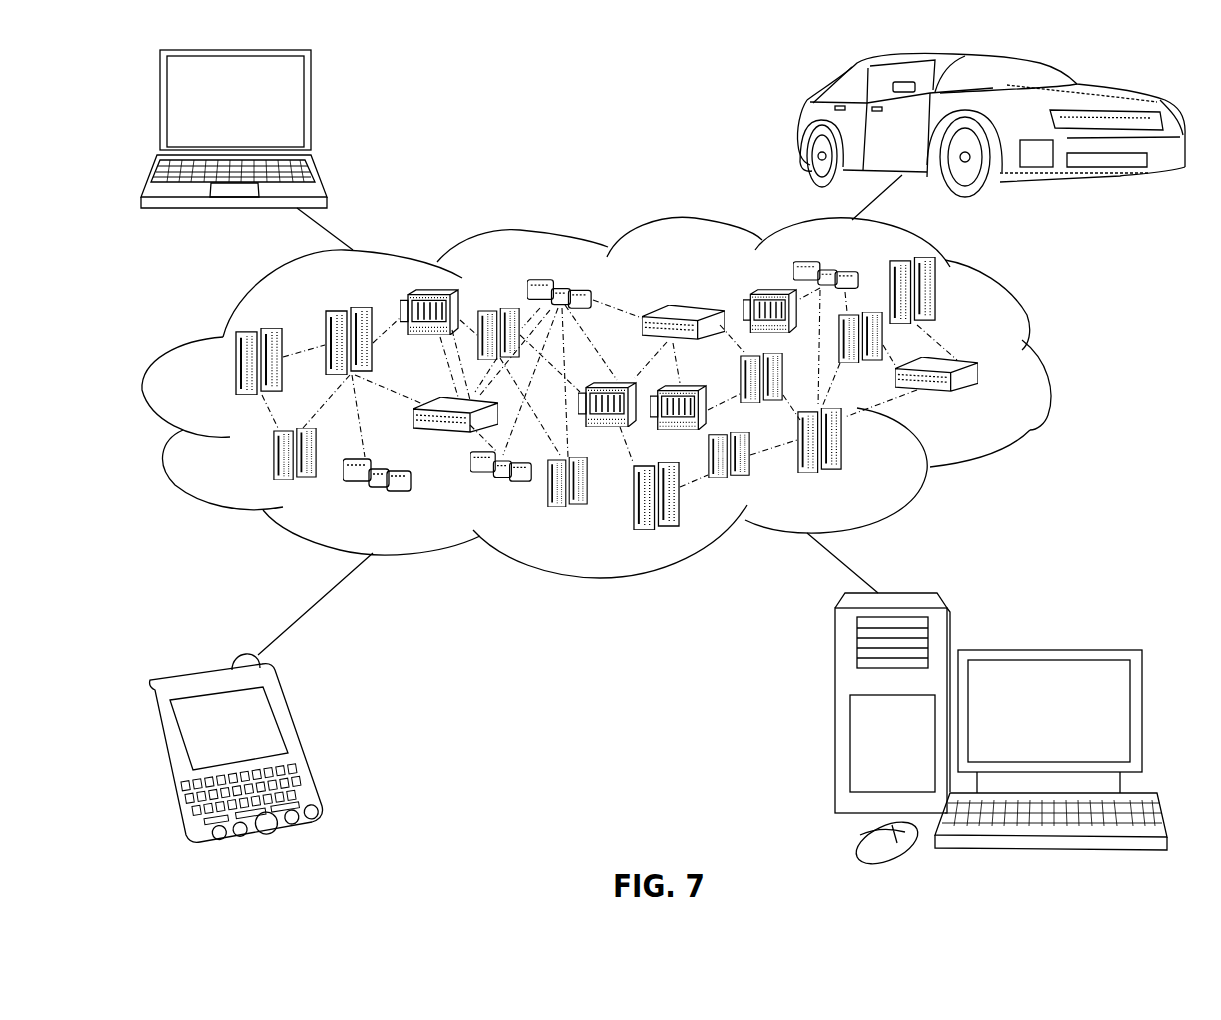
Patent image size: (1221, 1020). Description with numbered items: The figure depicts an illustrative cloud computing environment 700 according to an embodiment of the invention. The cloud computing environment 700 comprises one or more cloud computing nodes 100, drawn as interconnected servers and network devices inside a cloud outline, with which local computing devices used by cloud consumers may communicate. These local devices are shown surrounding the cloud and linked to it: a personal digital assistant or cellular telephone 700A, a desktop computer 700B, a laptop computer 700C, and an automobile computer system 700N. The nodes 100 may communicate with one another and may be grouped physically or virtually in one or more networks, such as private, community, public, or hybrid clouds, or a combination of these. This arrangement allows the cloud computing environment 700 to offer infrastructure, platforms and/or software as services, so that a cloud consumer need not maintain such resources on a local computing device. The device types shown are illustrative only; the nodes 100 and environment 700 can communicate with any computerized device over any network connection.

The cloud computing environment 700 is at (1050, 367).
The cloud computing nodes 100 is at (996, 406).
The personal digital assistant (PDA) or cellular telephone 700A is at (312, 733).
The desktop computer 700B is at (1047, 648).
The laptop computer 700C is at (312, 108).
The automobile computer system 700N is at (797, 122).